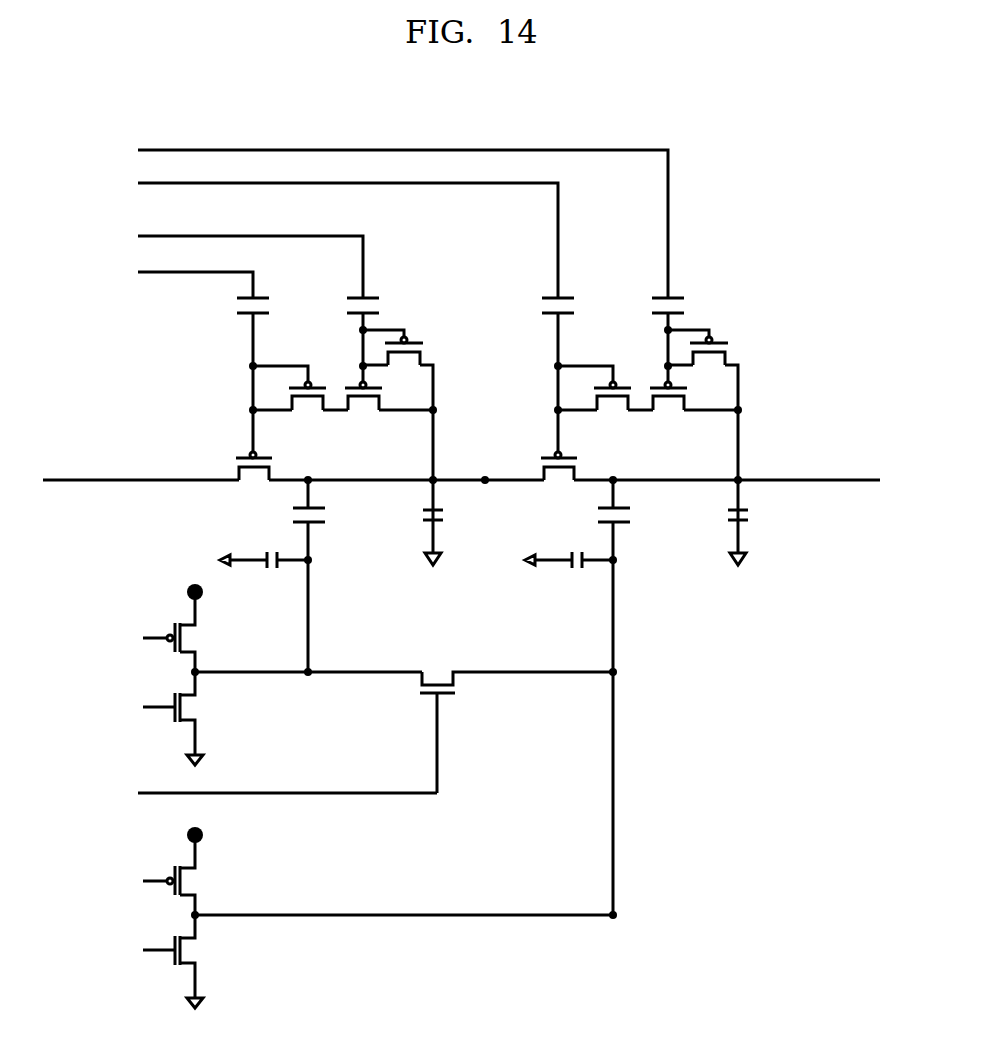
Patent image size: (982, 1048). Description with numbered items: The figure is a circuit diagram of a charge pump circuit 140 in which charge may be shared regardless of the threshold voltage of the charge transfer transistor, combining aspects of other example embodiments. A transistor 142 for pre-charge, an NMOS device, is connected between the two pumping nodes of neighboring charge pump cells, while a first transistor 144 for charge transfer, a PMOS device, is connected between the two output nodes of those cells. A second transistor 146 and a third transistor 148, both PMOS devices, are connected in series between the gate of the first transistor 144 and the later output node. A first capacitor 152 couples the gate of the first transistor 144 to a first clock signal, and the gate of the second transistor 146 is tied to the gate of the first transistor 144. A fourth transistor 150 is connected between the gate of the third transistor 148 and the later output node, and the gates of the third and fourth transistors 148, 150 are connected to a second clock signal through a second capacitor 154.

The charge pump circuit 140 is at (777, 183).
The transistor for pre-charge 142 is at (516, 718).
The first transistor for charge transfer 144 is at (410, 479).
The second transistor 146 is at (597, 403).
The third transistor 148 is at (672, 411).
The fourth transistor 150 is at (701, 361).
The first capacitor 152 is at (583, 304).
The second capacitor 154 is at (693, 307).